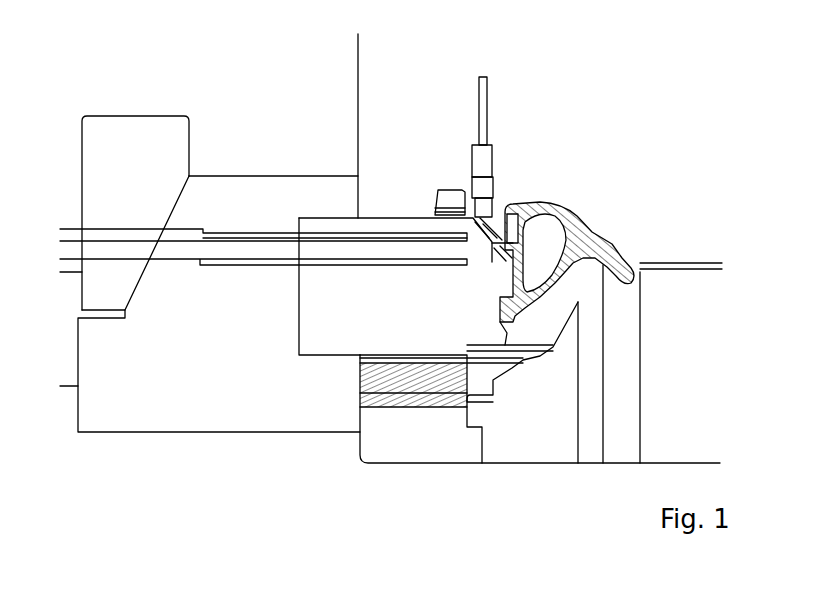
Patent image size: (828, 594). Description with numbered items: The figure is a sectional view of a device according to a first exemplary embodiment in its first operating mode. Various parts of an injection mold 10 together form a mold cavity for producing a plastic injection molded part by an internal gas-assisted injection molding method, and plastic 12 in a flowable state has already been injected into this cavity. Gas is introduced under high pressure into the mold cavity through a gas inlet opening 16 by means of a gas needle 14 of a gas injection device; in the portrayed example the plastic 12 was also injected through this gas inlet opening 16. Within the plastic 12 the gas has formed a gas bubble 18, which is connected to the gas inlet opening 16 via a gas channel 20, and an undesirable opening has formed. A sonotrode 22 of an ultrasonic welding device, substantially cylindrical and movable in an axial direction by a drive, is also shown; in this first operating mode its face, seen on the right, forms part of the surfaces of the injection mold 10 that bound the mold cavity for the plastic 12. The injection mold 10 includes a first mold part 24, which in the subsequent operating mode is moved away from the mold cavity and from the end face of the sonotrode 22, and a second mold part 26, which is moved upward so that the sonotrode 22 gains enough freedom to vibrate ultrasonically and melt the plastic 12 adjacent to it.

The injection mold 10 is at (615, 138).
The plastic 12 is at (592, 247).
The gas needle 14 is at (485, 190).
The gas inlet opening 16 is at (500, 208).
The gas bubble 18 is at (548, 240).
The gas channel 20 is at (465, 213).
The sonotrode 22 is at (397, 252).
The first mold part 24 is at (338, 332).
The second mold part 26 is at (155, 130).